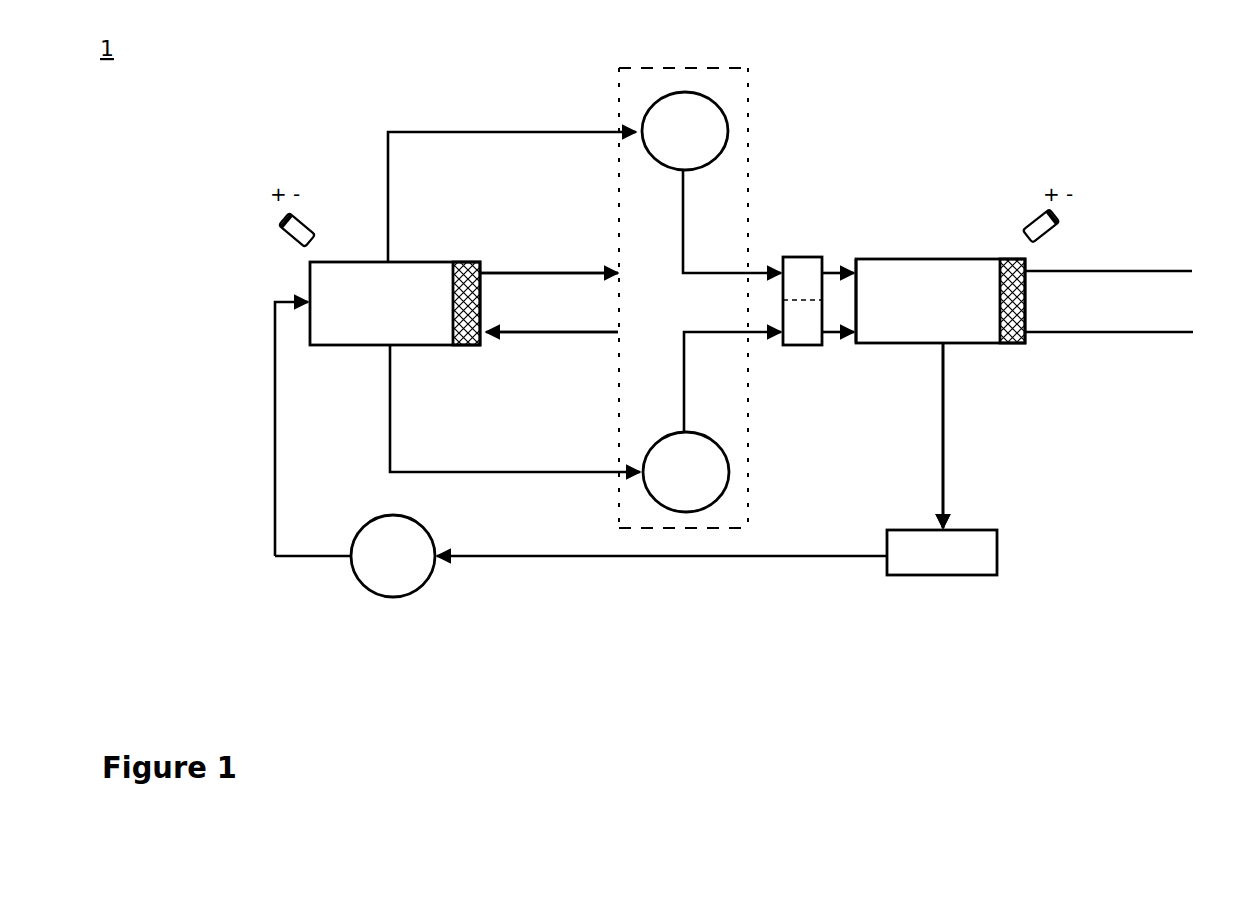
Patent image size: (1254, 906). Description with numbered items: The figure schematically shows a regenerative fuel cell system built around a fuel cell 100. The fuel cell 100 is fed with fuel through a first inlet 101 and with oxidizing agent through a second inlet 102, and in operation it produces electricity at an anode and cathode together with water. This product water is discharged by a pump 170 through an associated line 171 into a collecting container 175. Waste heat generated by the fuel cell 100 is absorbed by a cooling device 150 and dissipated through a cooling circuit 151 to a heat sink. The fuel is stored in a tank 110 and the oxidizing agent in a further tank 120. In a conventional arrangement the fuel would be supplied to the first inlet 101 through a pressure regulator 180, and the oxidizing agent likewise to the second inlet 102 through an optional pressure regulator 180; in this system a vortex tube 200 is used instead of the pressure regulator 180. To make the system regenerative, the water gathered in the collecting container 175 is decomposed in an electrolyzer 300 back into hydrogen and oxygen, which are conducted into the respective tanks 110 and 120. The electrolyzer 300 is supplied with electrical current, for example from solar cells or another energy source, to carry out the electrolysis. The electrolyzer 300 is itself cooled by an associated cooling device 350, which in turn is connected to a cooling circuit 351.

The fuel cell 100 is at (959, 306).
The first inlet 101 is at (853, 270).
The second inlet 102 is at (851, 347).
The tank 110 is at (698, 122).
The tank 120 is at (690, 497).
The cooling device 150 is at (1028, 334).
The cooling circuit 151 is at (1127, 331).
The pump 170 is at (982, 558).
The line 171 is at (943, 480).
The collecting container 175 is at (412, 570).
The pressure regulator 180 is at (802, 244).
The vortex tube 200 is at (796, 265).
The electrolyzer 300 is at (300, 250).
The cooling device 350 is at (461, 262).
The cooling circuit 351 is at (538, 330).